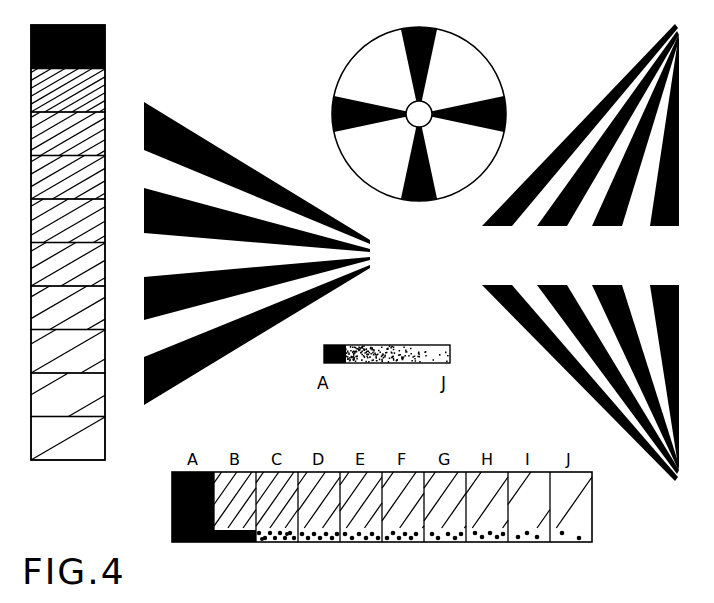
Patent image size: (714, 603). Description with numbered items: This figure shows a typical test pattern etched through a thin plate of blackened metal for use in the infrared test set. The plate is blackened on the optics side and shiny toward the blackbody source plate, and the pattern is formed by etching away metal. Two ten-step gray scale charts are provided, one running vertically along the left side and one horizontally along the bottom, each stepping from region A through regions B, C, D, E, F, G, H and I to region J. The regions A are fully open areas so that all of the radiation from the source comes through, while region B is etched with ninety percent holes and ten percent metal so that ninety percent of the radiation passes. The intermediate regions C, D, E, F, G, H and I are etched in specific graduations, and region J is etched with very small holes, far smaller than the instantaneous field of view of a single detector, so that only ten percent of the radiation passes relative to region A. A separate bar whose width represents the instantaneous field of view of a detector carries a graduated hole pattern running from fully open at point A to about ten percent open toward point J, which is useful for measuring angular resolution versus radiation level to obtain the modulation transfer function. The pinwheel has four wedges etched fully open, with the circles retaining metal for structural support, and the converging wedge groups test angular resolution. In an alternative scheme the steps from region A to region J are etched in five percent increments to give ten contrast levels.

The region A is at (78, 47).
The region B is at (77, 91).
The region C is at (78, 134).
The region D is at (78, 178).
The region E is at (77, 221).
The region F is at (76, 265).
The region G is at (78, 308).
The region H is at (78, 352).
The region I is at (75, 395).
The region J is at (74, 439).